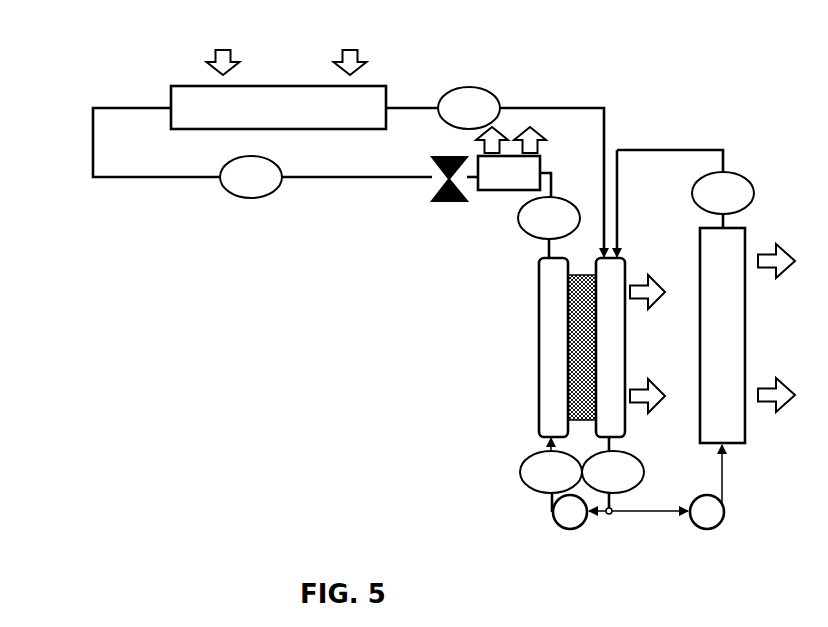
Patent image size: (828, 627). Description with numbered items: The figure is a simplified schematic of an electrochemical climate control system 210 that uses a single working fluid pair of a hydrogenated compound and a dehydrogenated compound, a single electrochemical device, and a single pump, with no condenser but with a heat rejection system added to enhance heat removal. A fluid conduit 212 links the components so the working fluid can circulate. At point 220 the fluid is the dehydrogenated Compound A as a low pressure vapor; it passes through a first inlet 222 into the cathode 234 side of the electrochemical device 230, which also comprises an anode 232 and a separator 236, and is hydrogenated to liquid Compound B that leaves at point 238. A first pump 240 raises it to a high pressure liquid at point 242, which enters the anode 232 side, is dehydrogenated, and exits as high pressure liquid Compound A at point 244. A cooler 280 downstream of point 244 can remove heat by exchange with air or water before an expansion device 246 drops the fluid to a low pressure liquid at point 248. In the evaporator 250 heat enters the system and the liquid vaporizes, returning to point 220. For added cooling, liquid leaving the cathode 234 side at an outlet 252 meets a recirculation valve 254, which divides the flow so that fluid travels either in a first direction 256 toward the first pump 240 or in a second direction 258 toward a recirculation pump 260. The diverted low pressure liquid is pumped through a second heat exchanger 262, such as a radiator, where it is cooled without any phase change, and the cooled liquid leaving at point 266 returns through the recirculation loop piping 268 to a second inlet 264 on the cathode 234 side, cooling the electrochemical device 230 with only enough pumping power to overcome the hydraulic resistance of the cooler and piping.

The electrochemical climate control system 210 is at (126, 60).
The fluid conduit 212 is at (93, 150).
The point 220 is at (453, 119).
The first inlet 222 is at (601, 252).
The electrochemical device 230 is at (539, 280).
The anode 232 is at (555, 345).
The cathode 234 is at (608, 360).
The separator 236 is at (568, 388).
The point 238 is at (597, 483).
The first pump 240 is at (557, 520).
The point 242 is at (535, 483).
The point 244 is at (533, 229).
The expansion device 246 is at (440, 203).
The point 248 is at (235, 188).
The evaporator 250 is at (262, 119).
The outlet 252 is at (624, 440).
The recirculation valve 254 is at (612, 514).
The first direction 256 is at (591, 514).
The second direction 258 is at (688, 517).
The recirculation pump 260 is at (724, 522).
The second heat exchanger 262 is at (733, 305).
The second inlet 264 is at (621, 253).
The point 266 is at (707, 204).
The recirculation loop piping 268 is at (667, 150).
The cooler 280 is at (495, 183).